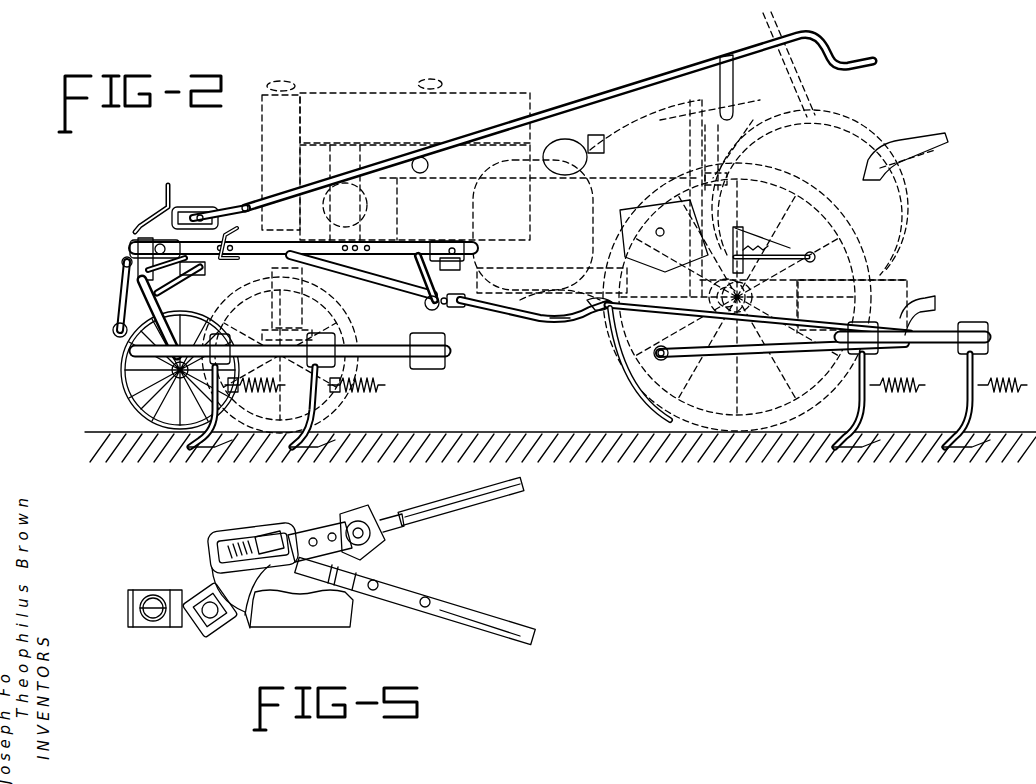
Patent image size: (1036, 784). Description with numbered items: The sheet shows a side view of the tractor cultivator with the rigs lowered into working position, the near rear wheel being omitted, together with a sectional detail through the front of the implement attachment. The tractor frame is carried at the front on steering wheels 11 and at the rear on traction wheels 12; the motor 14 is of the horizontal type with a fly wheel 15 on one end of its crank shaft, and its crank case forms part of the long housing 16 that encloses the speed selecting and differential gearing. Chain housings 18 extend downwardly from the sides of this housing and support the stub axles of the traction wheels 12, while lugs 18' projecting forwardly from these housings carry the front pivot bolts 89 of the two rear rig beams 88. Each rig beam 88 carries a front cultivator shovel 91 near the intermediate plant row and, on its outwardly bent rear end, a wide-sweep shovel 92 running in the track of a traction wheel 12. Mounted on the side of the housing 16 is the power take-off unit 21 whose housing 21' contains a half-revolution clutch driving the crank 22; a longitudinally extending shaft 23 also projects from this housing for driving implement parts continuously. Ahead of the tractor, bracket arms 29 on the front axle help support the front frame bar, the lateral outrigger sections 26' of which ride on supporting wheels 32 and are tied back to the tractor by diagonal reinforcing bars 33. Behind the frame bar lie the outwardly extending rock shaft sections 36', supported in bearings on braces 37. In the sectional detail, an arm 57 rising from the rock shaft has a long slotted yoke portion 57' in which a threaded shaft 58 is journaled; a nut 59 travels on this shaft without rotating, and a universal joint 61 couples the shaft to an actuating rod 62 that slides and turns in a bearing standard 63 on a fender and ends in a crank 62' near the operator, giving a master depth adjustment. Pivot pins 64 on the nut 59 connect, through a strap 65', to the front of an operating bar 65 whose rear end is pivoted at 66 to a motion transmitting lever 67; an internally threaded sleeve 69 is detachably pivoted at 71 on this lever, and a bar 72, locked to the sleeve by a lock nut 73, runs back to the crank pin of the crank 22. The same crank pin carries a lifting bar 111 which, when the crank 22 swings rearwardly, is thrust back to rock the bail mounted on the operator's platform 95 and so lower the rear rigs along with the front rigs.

In FIG. 2, the steering wheels 11 is at (352, 400).
In FIG. 2, the traction wheels 12 is at (610, 378).
In FIG. 2, the motor 14 is at (440, 175).
In FIG. 2, the fly wheel 15 is at (538, 165).
In FIG. 2, the housing 16 is at (646, 178).
In FIG. 2, the chain housings 18 is at (774, 241).
In FIG. 2, the lugs 18' is at (640, 364).
In FIG. 2, the power take-off unit 21 is at (560, 301).
In FIG. 2, the housing of the take-off device 21' is at (552, 332).
In FIG. 2, the crank 22 is at (592, 312).
In FIG. 2, the longitudinally extending shaft 23 is at (650, 262).
In FIG. 2, the bracket arms 29 is at (180, 261).
In FIG. 2, the supporting wheels 32 is at (140, 388).
In FIG. 2, the diagonal reinforcing bars 33 is at (378, 242).
In FIG. 2, the operating bar 65 is at (361, 275).
In FIG. 5, the operating bar 65 is at (415, 606).
In FIG. 2, the pivotal connection 66 is at (428, 306).
In FIG. 2, the motion transmitting lever 67 is at (441, 270).
In FIG. 2, the internally threaded sleeve 69 is at (439, 314).
In FIG. 2, the pivotal mounting 71 is at (455, 270).
In FIG. 2, the bar 72 is at (500, 308).
In FIG. 2, the lock nut 73 is at (460, 311).
In FIG. 2, the rig beams 88 is at (712, 358).
In FIG. 2, the front pivot bolts 89 is at (660, 360).
In FIG. 2, the front cultivator shovel 91 is at (835, 447).
In FIG. 2, the shovels 92 is at (950, 447).
In FIG. 2, the operator's platform 95 is at (862, 274).
In FIG. 2, the lifting bar 111 is at (758, 320).
In FIG. 2, the actuating rod 62 is at (559, 122).
In FIG. 5, the actuating rod 62 is at (461, 498).
In FIG. 2, the crank 62' is at (858, 44).
In FIG. 2, the bearing standard 63 is at (735, 85).
In FIG. 5, the lateral outrigger sections 26' is at (155, 626).
In FIG. 5, the outwardly extending rock shaft sections 36' is at (210, 620).
In FIG. 5, the braces 37 is at (318, 615).
In FIG. 5, the arm 57 is at (241, 609).
In FIG. 5, the slotted yoke portion 57' is at (265, 521).
In FIG. 5, the threaded shaft 58 is at (218, 532).
In FIG. 5, the nut 59 is at (282, 525).
In FIG. 5, the universal joint 61 is at (352, 514).
In FIG. 5, the pivot pins 64 is at (247, 537).
In FIG. 5, the strap 65' is at (368, 572).